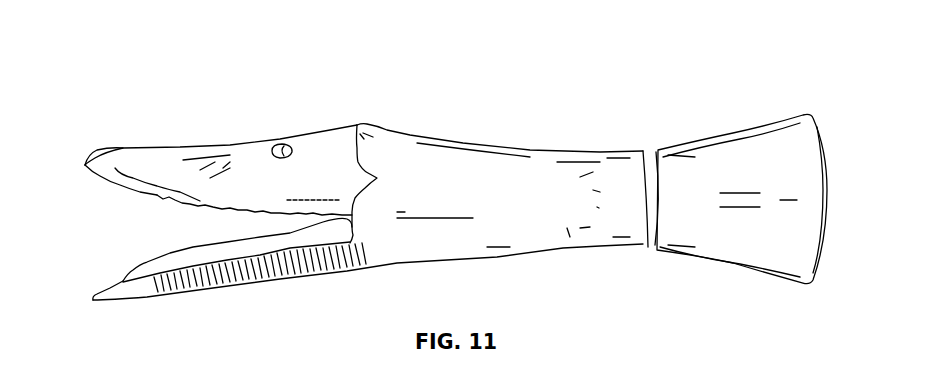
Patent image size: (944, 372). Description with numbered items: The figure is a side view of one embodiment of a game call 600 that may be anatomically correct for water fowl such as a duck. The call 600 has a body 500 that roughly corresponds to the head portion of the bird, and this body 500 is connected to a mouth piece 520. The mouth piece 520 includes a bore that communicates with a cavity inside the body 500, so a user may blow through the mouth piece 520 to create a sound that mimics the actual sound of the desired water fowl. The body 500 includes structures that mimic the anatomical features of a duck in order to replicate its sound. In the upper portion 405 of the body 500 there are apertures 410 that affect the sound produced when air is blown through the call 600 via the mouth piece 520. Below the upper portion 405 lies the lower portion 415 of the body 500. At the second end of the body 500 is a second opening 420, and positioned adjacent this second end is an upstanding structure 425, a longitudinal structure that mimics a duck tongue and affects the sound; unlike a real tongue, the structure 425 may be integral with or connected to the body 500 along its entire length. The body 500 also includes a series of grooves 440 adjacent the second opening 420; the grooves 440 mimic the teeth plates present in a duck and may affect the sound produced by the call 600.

The game call 600 is at (704, 47).
The body portion 500 is at (167, 92).
The upper portion 405 is at (153, 138).
The apertures 410 is at (283, 147).
The second opening 420 is at (143, 225).
The lower portion 415 is at (155, 318).
The upstanding structure 425 is at (175, 260).
The grooves 440 is at (307, 263).
The mouth piece 520 is at (743, 252).